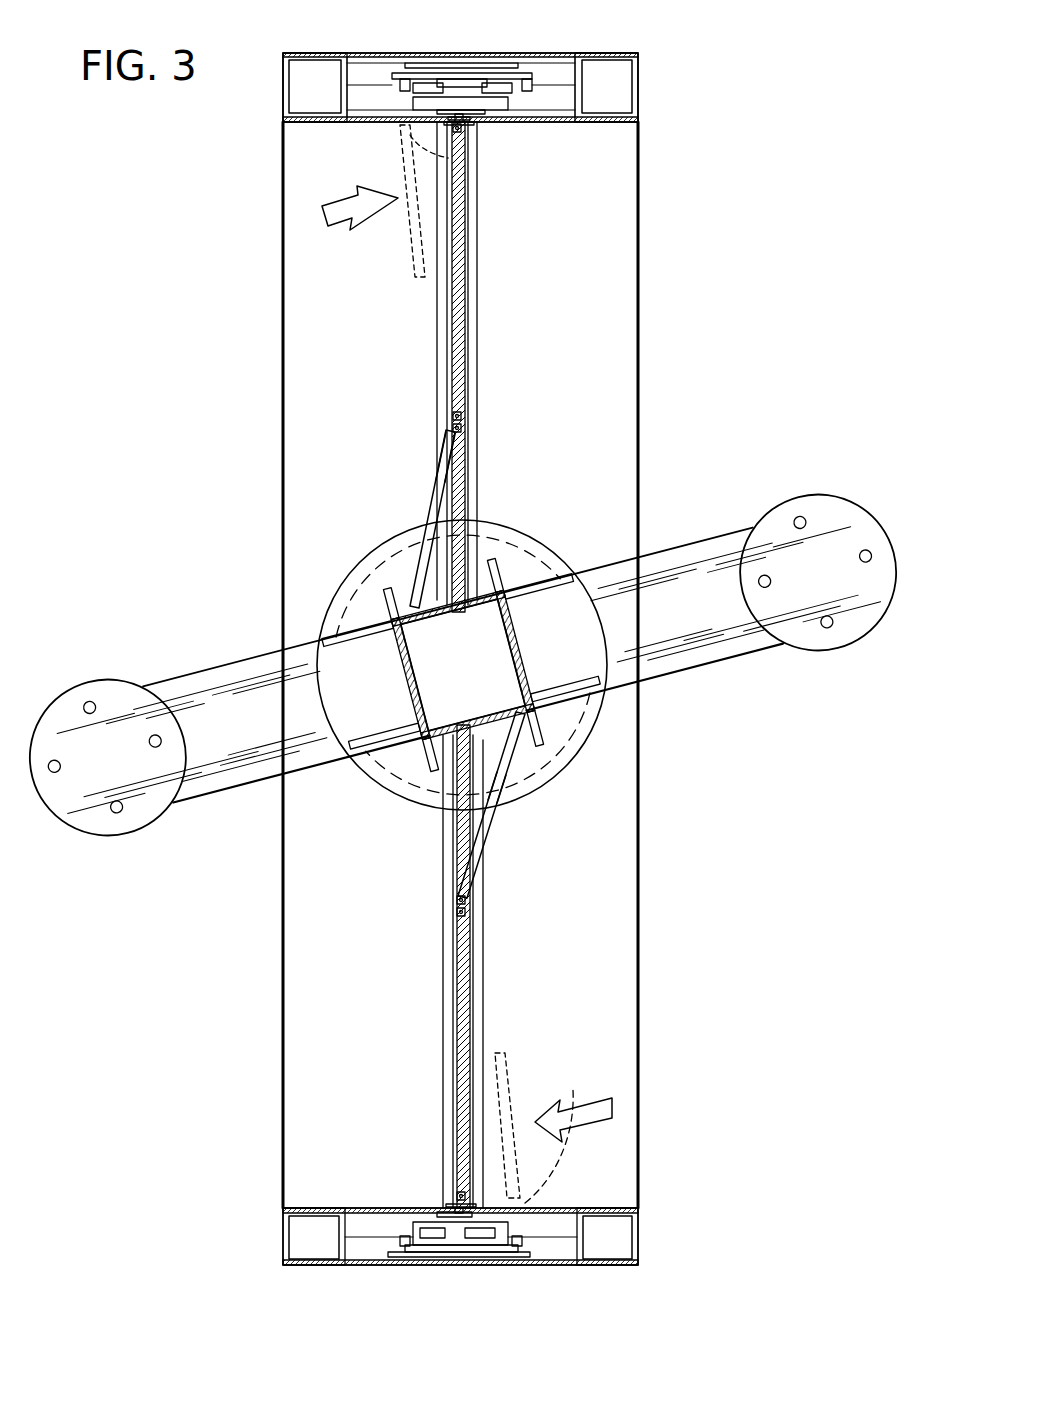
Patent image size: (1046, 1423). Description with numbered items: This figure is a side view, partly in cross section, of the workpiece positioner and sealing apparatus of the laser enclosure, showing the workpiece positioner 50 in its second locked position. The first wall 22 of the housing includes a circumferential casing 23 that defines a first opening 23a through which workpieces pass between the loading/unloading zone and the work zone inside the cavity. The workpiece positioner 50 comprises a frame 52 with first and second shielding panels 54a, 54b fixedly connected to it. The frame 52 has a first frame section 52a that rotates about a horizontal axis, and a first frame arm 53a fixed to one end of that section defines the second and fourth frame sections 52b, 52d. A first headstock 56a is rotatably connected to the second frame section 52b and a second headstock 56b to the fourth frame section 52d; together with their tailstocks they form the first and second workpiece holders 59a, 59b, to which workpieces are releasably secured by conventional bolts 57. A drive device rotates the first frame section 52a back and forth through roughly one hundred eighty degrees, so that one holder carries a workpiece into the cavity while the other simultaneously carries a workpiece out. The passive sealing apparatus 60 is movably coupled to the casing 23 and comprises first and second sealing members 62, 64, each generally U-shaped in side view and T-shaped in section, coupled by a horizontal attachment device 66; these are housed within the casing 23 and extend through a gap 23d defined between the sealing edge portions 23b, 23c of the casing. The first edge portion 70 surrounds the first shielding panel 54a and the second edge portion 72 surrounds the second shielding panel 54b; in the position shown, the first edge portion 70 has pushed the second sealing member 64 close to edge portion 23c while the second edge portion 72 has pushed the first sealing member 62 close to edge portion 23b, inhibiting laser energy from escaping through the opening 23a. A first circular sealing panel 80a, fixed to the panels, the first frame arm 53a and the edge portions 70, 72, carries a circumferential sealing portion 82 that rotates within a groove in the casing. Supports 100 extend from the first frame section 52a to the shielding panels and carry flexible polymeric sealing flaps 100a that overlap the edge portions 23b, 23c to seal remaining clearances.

The first wall 22 is at (615, 965).
The circumferential casing 23 is at (637, 82).
The first opening 23a is at (604, 124).
The edge portion 23b is at (447, 425).
The edge portion 23c is at (470, 1040).
The gap 23d is at (449, 388).
The workpiece positioner 50 is at (469, 593).
The frame 52 is at (553, 613).
The first frame section 52a is at (477, 615).
The second frame section 52b is at (672, 655).
The fourth frame section 52d is at (228, 777).
The first frame arm 53a is at (668, 560).
The first shielding panel 54a is at (460, 332).
The second shielding panel 54b is at (462, 985).
The first headstock 56a is at (813, 637).
The second headstock 56b is at (102, 817).
The bolts 57 is at (860, 556).
The first workpiece holder 59a is at (857, 620).
The second workpiece holder 59b is at (100, 690).
The passive sealing apparatus 60 is at (460, 665).
The first sealing member 62 is at (409, 971).
The second sealing member 64 is at (470, 386).
The horizontal attachment device 66 is at (500, 50).
The first edge portion 70 is at (478, 128).
The second edge portion 72 is at (485, 1200).
The first circular sealing panel 80a is at (373, 570).
The circumferential sealing portion 82 is at (400, 545).
The supports 100 is at (417, 578).
The flexible polymeric sealing flaps 100a is at (437, 492).